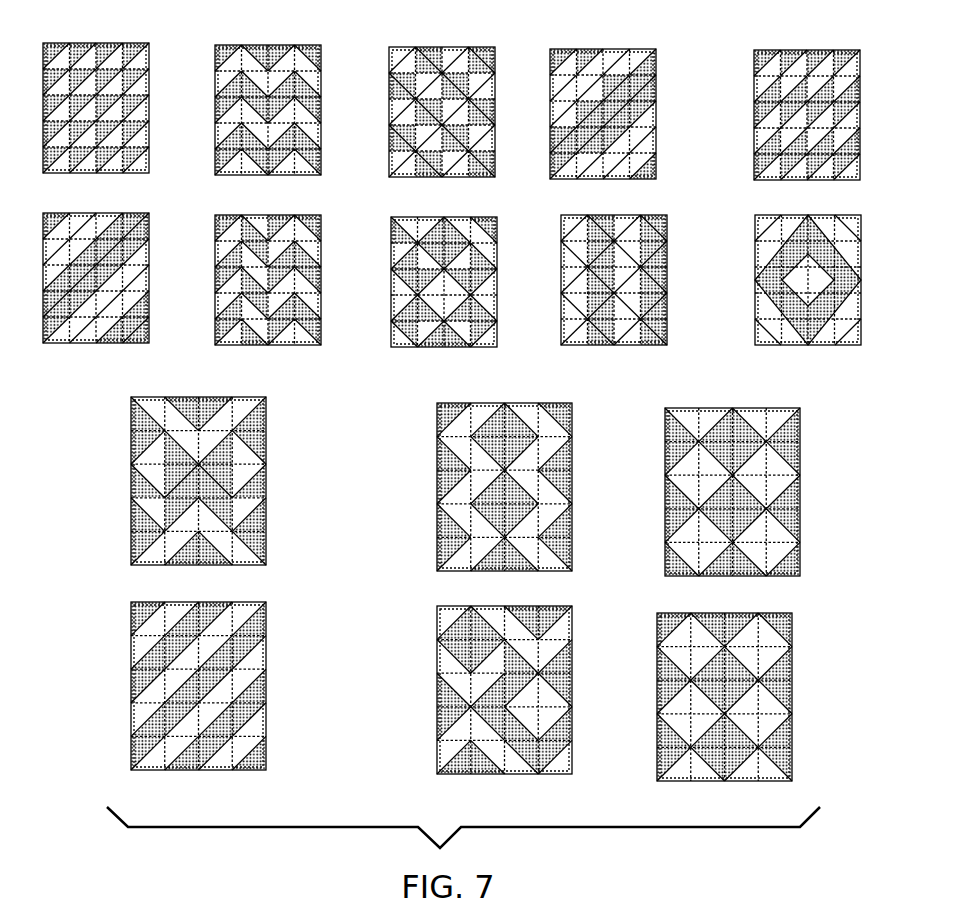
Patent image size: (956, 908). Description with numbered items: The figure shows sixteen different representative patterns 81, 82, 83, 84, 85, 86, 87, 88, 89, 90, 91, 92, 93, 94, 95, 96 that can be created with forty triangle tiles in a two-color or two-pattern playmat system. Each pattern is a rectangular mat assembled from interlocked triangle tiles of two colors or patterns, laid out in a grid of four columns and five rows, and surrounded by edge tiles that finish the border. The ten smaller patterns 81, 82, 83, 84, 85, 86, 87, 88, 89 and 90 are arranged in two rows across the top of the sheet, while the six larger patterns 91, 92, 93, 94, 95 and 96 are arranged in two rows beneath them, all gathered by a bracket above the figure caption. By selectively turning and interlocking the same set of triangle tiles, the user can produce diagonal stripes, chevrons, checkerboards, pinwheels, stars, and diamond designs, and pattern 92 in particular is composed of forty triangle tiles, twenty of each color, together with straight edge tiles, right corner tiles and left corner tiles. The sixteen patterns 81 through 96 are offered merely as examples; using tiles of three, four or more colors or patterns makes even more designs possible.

The pattern 81 is at (60, 43).
The pattern 82 is at (237, 47).
The pattern 83 is at (405, 47).
The pattern 84 is at (570, 50).
The pattern 85 is at (773, 50).
The pattern 86 is at (62, 213).
The pattern 87 is at (227, 215).
The pattern 88 is at (403, 217).
The pattern 89 is at (572, 215).
The pattern 90 is at (768, 215).
The pattern 91 is at (267, 508).
The pattern 92 is at (570, 517).
The pattern 93 is at (800, 502).
The pattern 94 is at (267, 717).
The pattern 95 is at (573, 715).
The pattern 96 is at (795, 720).